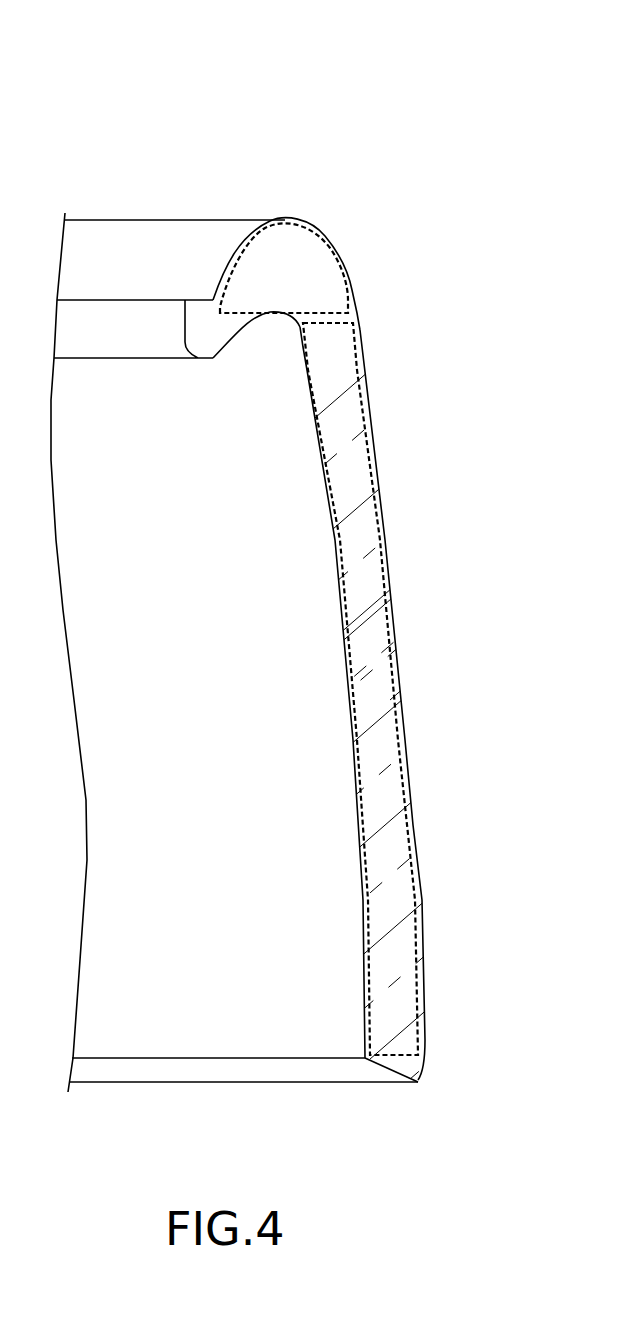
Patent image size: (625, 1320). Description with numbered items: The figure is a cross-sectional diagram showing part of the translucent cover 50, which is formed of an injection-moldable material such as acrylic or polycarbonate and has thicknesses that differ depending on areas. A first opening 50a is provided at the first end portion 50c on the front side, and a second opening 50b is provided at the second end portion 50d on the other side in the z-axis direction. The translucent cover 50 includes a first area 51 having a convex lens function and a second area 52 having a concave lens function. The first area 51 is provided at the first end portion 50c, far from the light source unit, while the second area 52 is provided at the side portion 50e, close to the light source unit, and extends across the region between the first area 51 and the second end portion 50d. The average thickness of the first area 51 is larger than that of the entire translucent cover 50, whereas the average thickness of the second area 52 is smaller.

The translucent cover 50 is at (95, 106).
The first opening 50a is at (152, 250).
The second opening 50b is at (193, 1068).
The first end portion 50c is at (297, 230).
The second end portion 50d is at (398, 1066).
The side portion 50e is at (442, 1063).
The first area 51 is at (348, 260).
The second area 52 is at (417, 825).